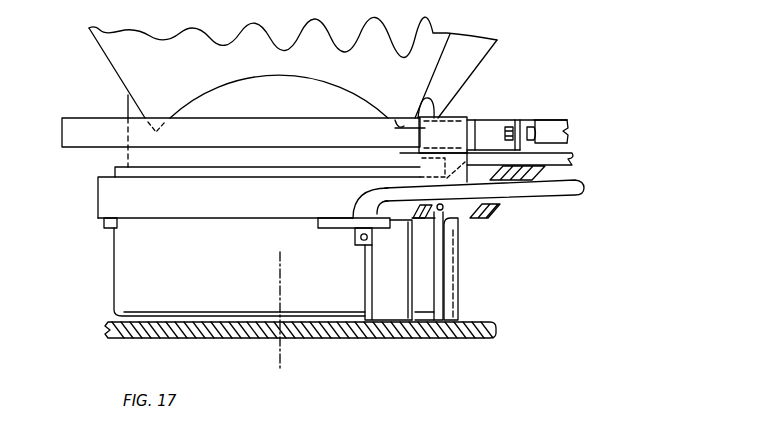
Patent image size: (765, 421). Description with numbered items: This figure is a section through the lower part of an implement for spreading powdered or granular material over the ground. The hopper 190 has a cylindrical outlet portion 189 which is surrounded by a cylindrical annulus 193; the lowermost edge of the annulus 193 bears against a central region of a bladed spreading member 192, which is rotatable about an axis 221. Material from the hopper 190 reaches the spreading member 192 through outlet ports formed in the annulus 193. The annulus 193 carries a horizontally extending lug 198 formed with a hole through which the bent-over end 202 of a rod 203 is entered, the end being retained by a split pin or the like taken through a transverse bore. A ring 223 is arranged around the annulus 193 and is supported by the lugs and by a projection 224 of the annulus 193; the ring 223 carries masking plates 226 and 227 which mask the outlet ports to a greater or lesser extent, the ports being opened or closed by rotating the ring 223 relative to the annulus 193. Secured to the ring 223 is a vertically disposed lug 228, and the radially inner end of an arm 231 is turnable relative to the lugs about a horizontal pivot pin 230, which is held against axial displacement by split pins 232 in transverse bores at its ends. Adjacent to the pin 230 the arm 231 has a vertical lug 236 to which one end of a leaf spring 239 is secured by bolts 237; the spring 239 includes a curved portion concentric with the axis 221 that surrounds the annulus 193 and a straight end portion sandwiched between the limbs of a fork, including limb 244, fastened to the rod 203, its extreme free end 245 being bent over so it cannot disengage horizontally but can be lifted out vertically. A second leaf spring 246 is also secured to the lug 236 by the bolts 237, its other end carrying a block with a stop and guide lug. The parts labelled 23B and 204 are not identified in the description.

The hopper 190 is at (318, 31).
The leaf spring 239 is at (92, 116).
The cylindrical outlet portion 189 is at (133, 153).
The limb 244 is at (400, 124).
The extreme free end 245 is at (472, 127).
The plate 23B is at (516, 118).
The vertical lug 236 is at (521, 124).
The bolts 237 is at (553, 130).
The leaf spring 246 is at (572, 131).
The arm 231 is at (573, 160).
The rod 203 is at (544, 196).
The bent-over end 202 is at (364, 201).
The ring 223 is at (112, 190).
The projection 224 is at (104, 224).
The cylindrical annulus 193 is at (115, 265).
The bladed spreading member 192 is at (153, 331).
The axis 221 is at (282, 362).
The horizontally extending lug 198 is at (322, 221).
The pivot block 204 is at (356, 240).
The masking plate 227 is at (378, 288).
The horizontal pivot pin 230 is at (422, 232).
The vertically disposed lug 228 is at (426, 217).
The split pins 232 is at (452, 225).
The masking plate 226 is at (455, 293).